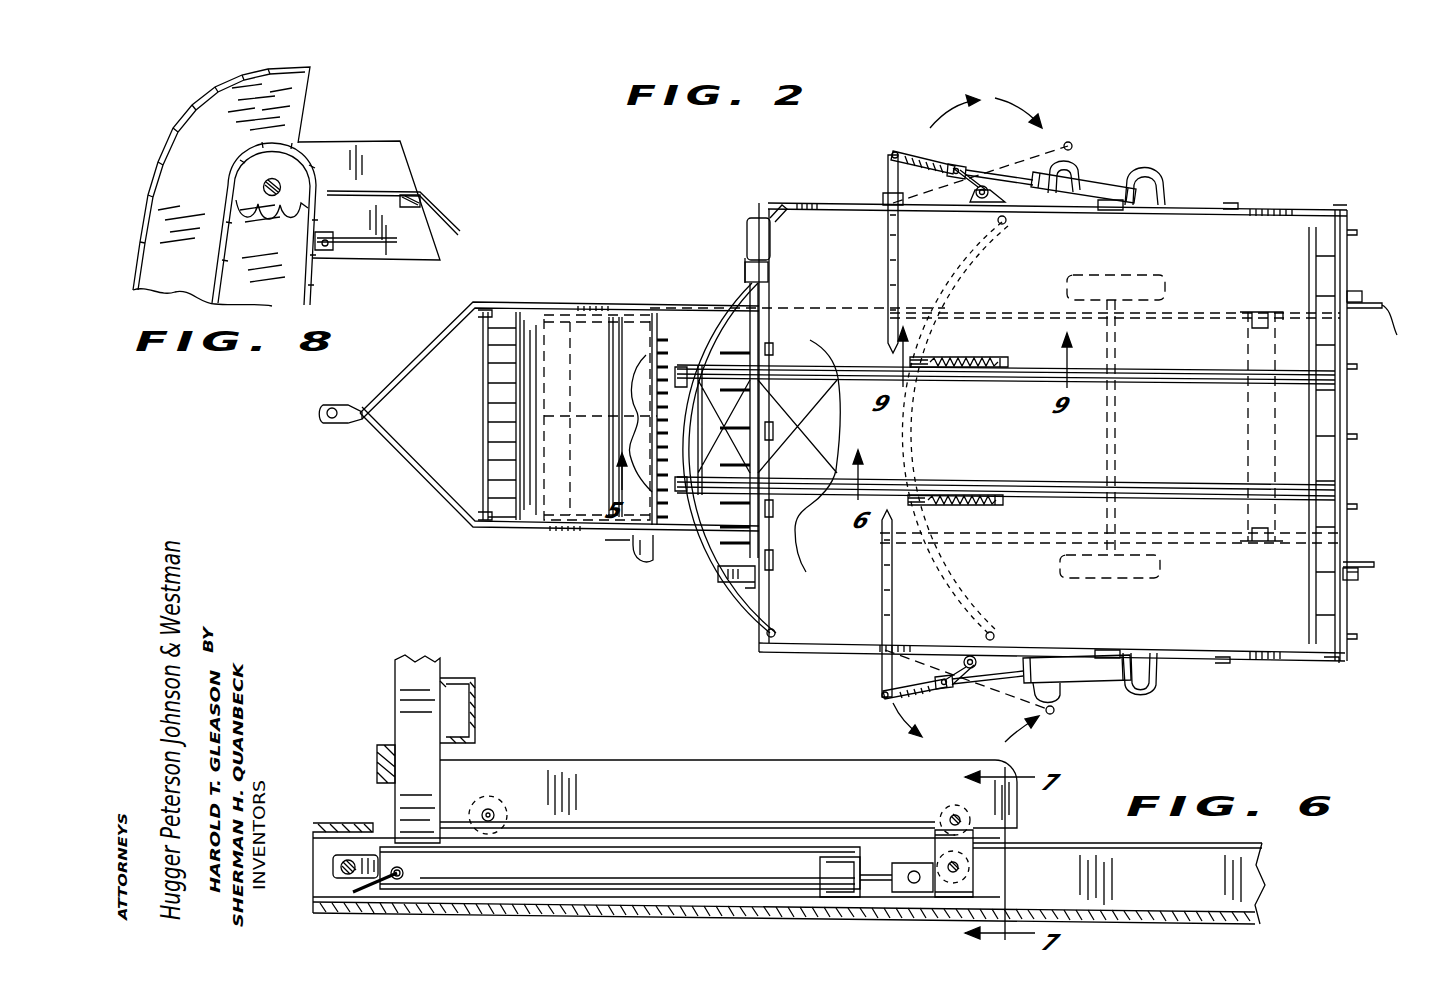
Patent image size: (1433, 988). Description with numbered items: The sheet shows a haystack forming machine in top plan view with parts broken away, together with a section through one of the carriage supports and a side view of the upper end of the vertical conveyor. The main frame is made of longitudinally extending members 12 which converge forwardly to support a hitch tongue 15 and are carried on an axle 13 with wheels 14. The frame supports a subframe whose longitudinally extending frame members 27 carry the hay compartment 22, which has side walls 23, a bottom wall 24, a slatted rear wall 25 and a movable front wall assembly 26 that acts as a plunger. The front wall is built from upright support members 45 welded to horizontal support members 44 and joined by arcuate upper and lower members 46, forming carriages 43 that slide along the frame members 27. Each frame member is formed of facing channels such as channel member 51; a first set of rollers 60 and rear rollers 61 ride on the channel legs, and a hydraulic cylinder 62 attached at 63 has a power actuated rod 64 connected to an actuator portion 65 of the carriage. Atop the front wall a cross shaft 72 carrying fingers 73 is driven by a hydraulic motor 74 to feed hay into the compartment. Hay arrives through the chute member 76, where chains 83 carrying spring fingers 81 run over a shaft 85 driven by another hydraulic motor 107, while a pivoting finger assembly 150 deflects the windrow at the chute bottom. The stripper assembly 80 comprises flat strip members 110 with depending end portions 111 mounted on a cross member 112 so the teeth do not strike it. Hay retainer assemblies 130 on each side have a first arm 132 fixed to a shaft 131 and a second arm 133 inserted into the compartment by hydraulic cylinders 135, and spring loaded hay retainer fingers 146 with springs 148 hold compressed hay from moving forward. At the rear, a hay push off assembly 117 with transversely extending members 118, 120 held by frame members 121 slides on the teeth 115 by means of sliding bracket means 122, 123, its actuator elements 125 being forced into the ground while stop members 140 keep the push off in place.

In FIG. 2, the longitudinally extending member 12 is at (540, 302).
In FIG. 2, the axle 13 is at (1120, 465).
In FIG. 2, the wheel 14 is at (1148, 272).
In FIG. 2, the hitch tongue 15 is at (338, 428).
In FIG. 2, the hay compartment 22 is at (1276, 205).
In FIG. 2, the side wall 23 is at (1162, 205).
In FIG. 2, the bottom wall 24 is at (825, 235).
In FIG. 2, the slatted rear wall 25 is at (1352, 264).
In FIG. 2, the movable front wall assembly 26 is at (712, 292).
In FIG. 2, the longitudinally extending frame member 27 is at (822, 385).
In FIG. 6, the longitudinally extending frame member 27 is at (1072, 832).
In FIG. 2, the carriage 43 is at (722, 372).
In FIG. 6, the carriage 43 is at (575, 748).
In FIG. 2, the horizontal support member 44 is at (825, 365).
In FIG. 6, the horizontal support member 44 is at (730, 775).
In FIG. 2, the upright support member 45 is at (662, 320).
In FIG. 6, the upright support member 45 is at (402, 690).
In FIG. 6, the upper and lower member 46 is at (478, 700).
In FIG. 6, the channel member 51 is at (1130, 866).
In FIG. 6, the first set of rollers 60 is at (948, 817).
In FIG. 6, the rear roller 61 is at (505, 812).
In FIG. 6, the hydraulic cylinder 62 is at (605, 860).
In FIG. 6, the cylinder attachment 63 is at (345, 855).
In FIG. 6, the power actuated rod 64 is at (888, 855).
In FIG. 6, the actuator portion 65 is at (975, 885).
In FIG. 2, the cross shaft 72 is at (757, 300).
In FIG. 2, the finger 73 is at (735, 305).
In FIG. 2, the hydraulic motor 74 is at (745, 230).
In FIG. 8, the chute member 76 is at (296, 86).
In FIG. 8, the stripper assembly 80 is at (350, 138).
In FIG. 8, the spring finger 81 is at (362, 255).
In FIG. 8, the chain 83 is at (303, 280).
In FIG. 8, the shaft 85 is at (268, 181).
In FIG. 2, the shaft 85 is at (650, 412).
In FIG. 2, the hydraulic motor 107 is at (652, 575).
In FIG. 8, the flat strip member 110 is at (382, 190).
In FIG. 8, the end portion 111 is at (462, 208).
In FIG. 8, the cross member 112 is at (400, 258).
In FIG. 2, the teeth 115 is at (1357, 367).
In FIG. 2, the hay push off assembly 117 is at (1306, 615).
In FIG. 2, the transversely extending member 118 is at (1348, 482).
In FIG. 2, the third transversely extending member 120 is at (1310, 590).
In FIG. 2, the frame member 121 is at (1325, 283).
In FIG. 2, the sliding bracket means 122 is at (1360, 576).
In FIG. 2, the sliding bracket means 123 is at (1365, 300).
In FIG. 2, the actuator element 125 is at (1372, 562).
In FIG. 2, the hay retainer assembly 130 is at (946, 170).
In FIG. 2, the shaft 131 is at (978, 205).
In FIG. 2, the first arm 132 is at (897, 152).
In FIG. 2, the second arm 133 is at (885, 175).
In FIG. 2, the hydraulic cylinder 135 is at (1105, 180).
In FIG. 2, the stop member 140 is at (1360, 296).
In FIG. 2, the hay retainer finger 146 is at (928, 358).
In FIG. 2, the spring 148 is at (1000, 362).
In FIG. 2, the pivoting finger assembly 150 is at (503, 322).